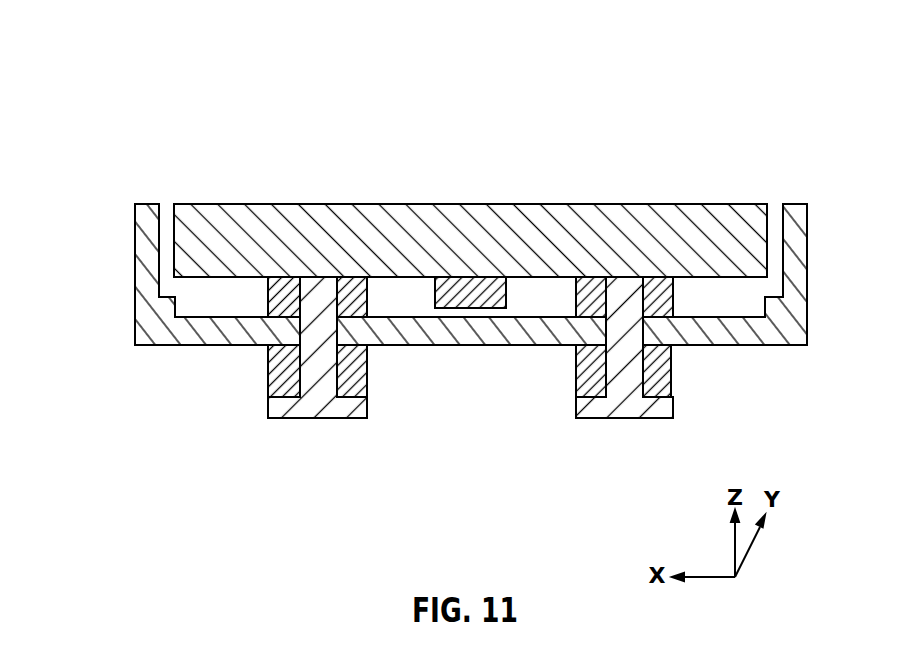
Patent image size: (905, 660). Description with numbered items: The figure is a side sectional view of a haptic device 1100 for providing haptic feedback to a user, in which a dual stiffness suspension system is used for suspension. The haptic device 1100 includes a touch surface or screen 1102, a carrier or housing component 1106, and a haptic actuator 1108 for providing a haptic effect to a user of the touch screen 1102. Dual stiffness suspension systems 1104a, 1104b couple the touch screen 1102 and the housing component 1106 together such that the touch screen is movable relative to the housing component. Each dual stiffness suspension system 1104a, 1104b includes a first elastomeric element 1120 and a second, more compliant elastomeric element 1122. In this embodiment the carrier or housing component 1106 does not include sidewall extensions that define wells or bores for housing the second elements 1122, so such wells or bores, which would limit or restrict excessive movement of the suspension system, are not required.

The haptic device 1100 is at (432, 241).
The touch surface or screen 1102 is at (473, 225).
The dual stiffness suspension system 1104a is at (262, 359).
The dual stiffness suspension system 1104b is at (678, 363).
The carrier or housing component 1106 is at (140, 250).
The haptic actuator 1108 is at (474, 296).
The first element 1120 is at (276, 298).
The second element 1122 is at (278, 379).